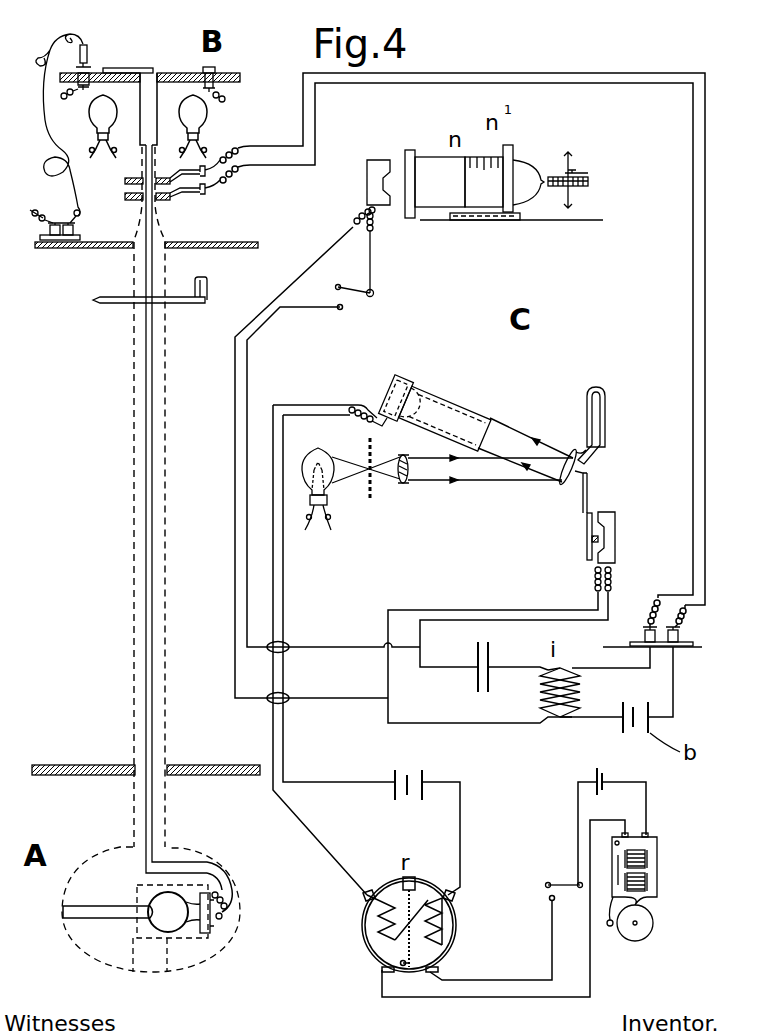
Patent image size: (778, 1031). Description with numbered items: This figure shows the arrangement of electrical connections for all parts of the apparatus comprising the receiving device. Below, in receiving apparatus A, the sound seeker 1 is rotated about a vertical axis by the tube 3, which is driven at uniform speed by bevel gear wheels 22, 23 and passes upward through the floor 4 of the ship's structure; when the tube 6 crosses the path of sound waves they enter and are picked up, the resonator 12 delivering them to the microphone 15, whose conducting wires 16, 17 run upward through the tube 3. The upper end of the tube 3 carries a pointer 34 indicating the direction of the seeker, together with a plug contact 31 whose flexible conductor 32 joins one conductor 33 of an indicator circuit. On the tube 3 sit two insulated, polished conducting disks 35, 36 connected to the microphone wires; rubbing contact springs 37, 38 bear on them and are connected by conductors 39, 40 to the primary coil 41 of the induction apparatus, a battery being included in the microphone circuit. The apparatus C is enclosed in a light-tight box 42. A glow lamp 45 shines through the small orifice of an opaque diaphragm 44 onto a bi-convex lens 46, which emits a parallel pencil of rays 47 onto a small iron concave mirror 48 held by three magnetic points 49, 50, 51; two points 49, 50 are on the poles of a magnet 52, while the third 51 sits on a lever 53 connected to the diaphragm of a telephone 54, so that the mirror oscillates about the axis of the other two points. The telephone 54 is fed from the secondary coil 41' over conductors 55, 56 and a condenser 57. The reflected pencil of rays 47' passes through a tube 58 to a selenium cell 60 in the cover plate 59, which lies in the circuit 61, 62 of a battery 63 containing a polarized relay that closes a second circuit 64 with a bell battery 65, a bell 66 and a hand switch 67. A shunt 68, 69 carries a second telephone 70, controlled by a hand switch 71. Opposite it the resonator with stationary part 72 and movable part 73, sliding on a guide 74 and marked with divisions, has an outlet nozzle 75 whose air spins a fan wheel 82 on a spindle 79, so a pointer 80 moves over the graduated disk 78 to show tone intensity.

The sound seeker 1 is at (90, 958).
The tube 3 is at (166, 540).
The floor 4 is at (225, 770).
The tube 6 is at (112, 910).
The resonator 12 is at (170, 928).
The microphone 15 is at (205, 935).
The conducting wire 16 is at (145, 716).
The conducting wire 17 is at (153, 732).
The bevel gear wheel 22 is at (106, 304).
The bevel gear wheel 23 is at (207, 285).
The plug contact 31 is at (88, 52).
The flexible conductor 32 is at (42, 127).
The conductor 33 is at (55, 216).
The pointer 34 is at (135, 73).
The conducting disk 35 is at (125, 181).
The conducting disk 36 is at (125, 197).
The rubbing contact spring 37 is at (180, 170).
The rubbing contact spring 38 is at (182, 195).
The conductor 39 is at (545, 73).
The conductor 40 is at (580, 83).
The primary coil 41 is at (579, 692).
The secondary coil 41' is at (533, 695).
The light-tight closed box 42 is at (565, 221).
The opaque diaphragm 44 is at (373, 496).
The glow lamp 45 is at (315, 456).
The bi-convex lens 46 is at (410, 472).
The pencil of rays 47 is at (490, 482).
The reflected pencil of rays 47' is at (525, 431).
The concave mirror 48 is at (567, 486).
The magnetic point 49 is at (582, 458).
The magnetic point 50 is at (594, 459).
The magnetic point 51 is at (574, 492).
The magnet 52 is at (606, 408).
The lever 53 is at (587, 535).
The telephone 54 is at (610, 537).
The conductor 55 is at (505, 610).
The conductor 56 is at (545, 620).
The condenser 57 is at (489, 662).
The tube 58 is at (440, 397).
The cover plate 59 is at (400, 377).
The selenium cell 60 is at (353, 428).
The circuit conductor 61 is at (273, 515).
The circuit conductor 62 is at (283, 560).
The battery 63 is at (408, 770).
The second circuit 64 is at (500, 997).
The bell battery 65 is at (607, 776).
The bell 66 is at (650, 858).
The hand switch 67 is at (563, 872).
The shunt conductor 68 is at (300, 275).
The shunt conductor 69 is at (283, 310).
The second telephone 70 is at (376, 160).
The hand switch 71 is at (357, 280).
The stationary resonator part 72 is at (435, 184).
The movable resonator part 73 is at (489, 178).
The guide 74 is at (491, 221).
The outlet nozzle 75 is at (535, 166).
The graduated disk 78 is at (588, 178).
The spindle 79 is at (572, 195).
The pointer 80 is at (580, 172).
The fan wheel 82 is at (588, 183).